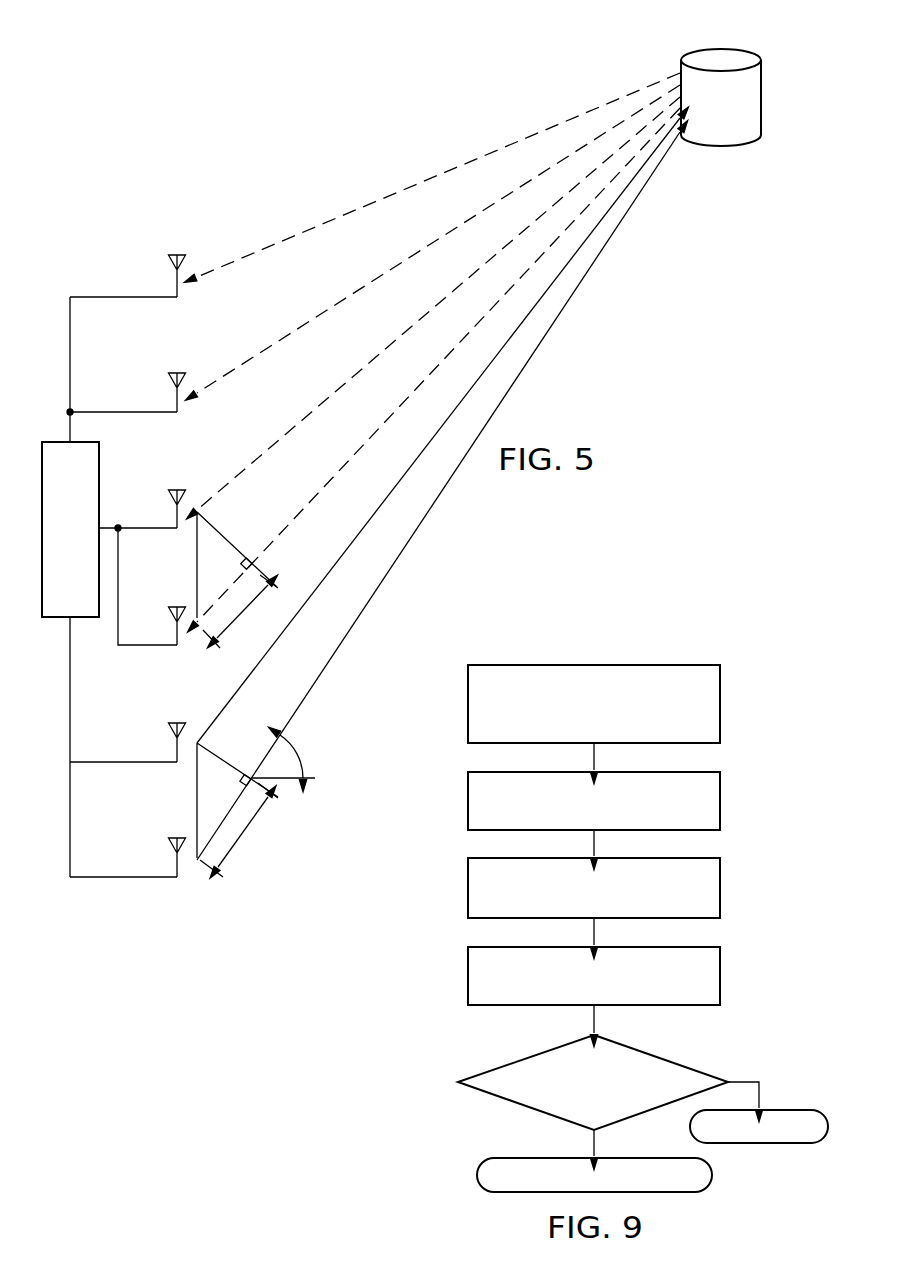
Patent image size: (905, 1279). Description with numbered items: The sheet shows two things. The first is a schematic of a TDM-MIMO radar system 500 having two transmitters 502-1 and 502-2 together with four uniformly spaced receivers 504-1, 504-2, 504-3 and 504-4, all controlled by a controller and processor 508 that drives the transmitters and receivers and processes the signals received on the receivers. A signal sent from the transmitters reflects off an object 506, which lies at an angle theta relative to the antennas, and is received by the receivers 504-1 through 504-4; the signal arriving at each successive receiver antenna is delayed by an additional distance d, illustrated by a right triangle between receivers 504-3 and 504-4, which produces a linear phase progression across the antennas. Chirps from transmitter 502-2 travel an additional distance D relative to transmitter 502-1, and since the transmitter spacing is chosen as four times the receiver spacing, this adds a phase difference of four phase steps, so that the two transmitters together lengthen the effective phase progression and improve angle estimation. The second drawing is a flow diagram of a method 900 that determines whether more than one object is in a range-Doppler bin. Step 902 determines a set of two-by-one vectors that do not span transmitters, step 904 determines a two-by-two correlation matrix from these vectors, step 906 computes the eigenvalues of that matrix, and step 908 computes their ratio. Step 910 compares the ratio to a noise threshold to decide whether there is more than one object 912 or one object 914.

In FIG. 5, the TDM-MIMO system 500 is at (388, 120).
In FIG. 5, the transmitter 502-1 is at (174, 721).
In FIG. 5, the transmitter 502-2 is at (174, 836).
In FIG. 5, the receiver 504-1 is at (174, 253).
In FIG. 5, the receiver 504-2 is at (174, 371).
In FIG. 5, the receiver 504-3 is at (174, 488).
In FIG. 5, the receiver 504-4 is at (174, 605).
In FIG. 5, the object 506 is at (720, 47).
In FIG. 5, the controller and processor 508 is at (55, 619).
In FIG. 9, the method 900 is at (694, 638).
In FIG. 9, the step 902 is at (468, 702).
In FIG. 9, the step 904 is at (468, 800).
In FIG. 9, the step 906 is at (468, 887).
In FIG. 9, the step 908 is at (468, 974).
In FIG. 9, the step 910 is at (524, 1106).
In FIG. 9, the more than one object 912 is at (478, 1175).
In FIG. 9, the one object 914 is at (770, 1143).